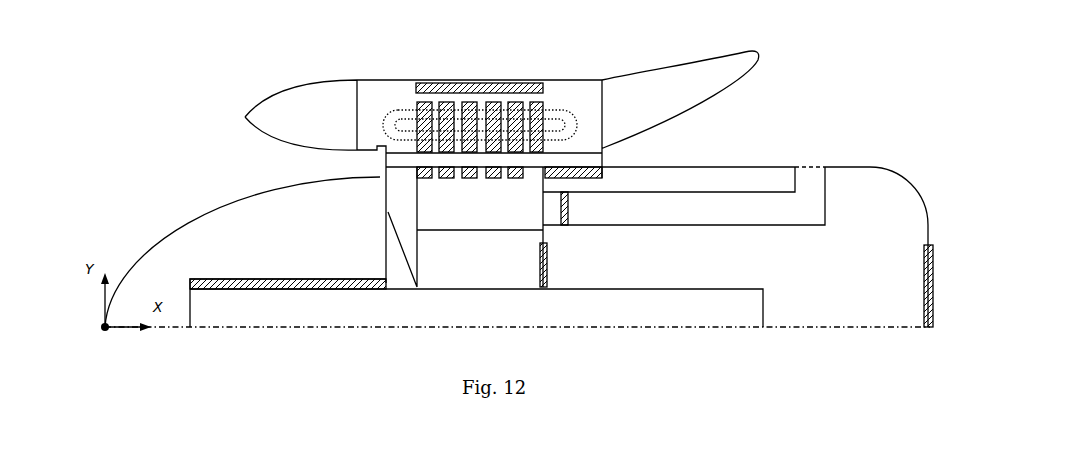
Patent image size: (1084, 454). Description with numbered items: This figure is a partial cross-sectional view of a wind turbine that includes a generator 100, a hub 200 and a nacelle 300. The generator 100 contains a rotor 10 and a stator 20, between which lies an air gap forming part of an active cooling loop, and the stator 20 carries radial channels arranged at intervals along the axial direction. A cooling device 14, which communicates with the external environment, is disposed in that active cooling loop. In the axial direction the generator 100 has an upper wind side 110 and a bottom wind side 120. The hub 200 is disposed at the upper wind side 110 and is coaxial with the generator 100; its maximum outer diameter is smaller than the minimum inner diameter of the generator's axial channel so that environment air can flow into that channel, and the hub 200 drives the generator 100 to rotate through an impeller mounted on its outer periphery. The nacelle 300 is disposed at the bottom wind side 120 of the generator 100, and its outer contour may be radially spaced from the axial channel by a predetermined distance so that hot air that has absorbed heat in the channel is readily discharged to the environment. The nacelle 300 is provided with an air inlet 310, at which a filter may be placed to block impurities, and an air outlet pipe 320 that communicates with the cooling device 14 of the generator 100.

The generator 100 is at (498, 158).
The rotor 10 is at (550, 80).
The stator 20 is at (418, 102).
The upper wind side 110 is at (256, 145).
The bottom wind side 120 is at (770, 88).
The hub 200 is at (152, 244).
The nacelle 300 is at (738, 220).
The air inlet 310 is at (925, 291).
The air outlet pipe 320 is at (685, 192).
The cooling device 14 is at (568, 210).